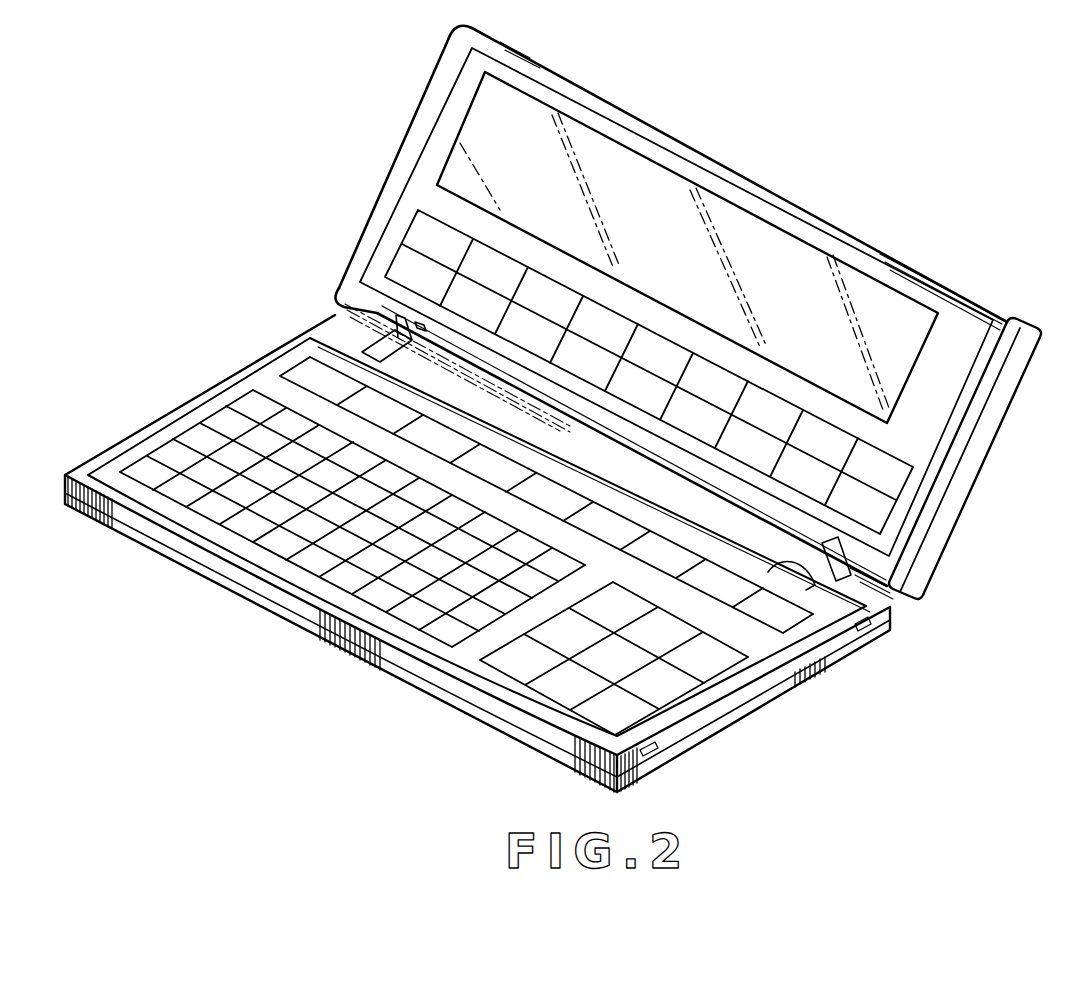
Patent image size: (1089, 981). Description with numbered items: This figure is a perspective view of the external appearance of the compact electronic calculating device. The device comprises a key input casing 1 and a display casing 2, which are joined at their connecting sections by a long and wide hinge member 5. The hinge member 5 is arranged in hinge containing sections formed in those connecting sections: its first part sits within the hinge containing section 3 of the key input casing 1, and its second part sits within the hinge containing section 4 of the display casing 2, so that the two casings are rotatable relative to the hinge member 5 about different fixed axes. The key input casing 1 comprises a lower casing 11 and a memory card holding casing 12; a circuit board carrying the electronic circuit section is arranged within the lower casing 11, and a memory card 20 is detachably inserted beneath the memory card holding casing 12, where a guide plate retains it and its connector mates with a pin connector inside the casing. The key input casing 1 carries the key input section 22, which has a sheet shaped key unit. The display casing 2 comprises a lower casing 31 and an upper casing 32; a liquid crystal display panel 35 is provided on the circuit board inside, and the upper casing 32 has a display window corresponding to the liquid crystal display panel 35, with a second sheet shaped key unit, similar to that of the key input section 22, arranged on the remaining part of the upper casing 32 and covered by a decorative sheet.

The key input casing 1 is at (213, 580).
The display casing 2 is at (815, 210).
The hinge containing section 3 is at (813, 587).
The hinge containing section 4 is at (845, 568).
The hinge member 5 is at (393, 333).
The lower casing 11 is at (300, 627).
The memory card holding casing 12 is at (412, 663).
The memory card 20 is at (752, 700).
The key input section 22 is at (268, 388).
The lower casing 31 is at (1010, 400).
The upper casing 32 is at (953, 473).
The liquid crystal display panel 35 is at (478, 137).